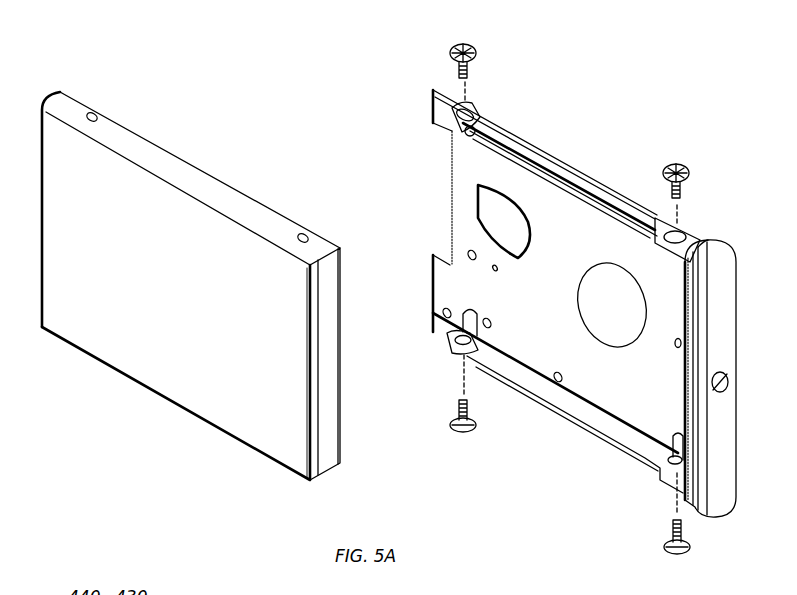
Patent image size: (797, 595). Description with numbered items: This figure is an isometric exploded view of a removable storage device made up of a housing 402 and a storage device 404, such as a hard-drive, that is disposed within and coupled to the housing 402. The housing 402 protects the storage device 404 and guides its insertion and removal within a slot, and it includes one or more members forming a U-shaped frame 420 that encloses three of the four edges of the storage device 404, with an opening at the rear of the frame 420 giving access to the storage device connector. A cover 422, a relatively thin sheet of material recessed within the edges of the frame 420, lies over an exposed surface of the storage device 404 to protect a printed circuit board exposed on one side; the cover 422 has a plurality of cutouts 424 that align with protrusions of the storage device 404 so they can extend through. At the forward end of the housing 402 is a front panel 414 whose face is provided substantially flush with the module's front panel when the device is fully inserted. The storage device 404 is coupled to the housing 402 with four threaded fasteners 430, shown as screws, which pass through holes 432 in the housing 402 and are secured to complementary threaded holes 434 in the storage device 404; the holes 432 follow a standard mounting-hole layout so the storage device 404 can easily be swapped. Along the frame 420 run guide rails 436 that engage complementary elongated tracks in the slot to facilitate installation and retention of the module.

The housing 402 is at (598, 139).
The storage device 404 is at (160, 392).
The front panel 414 is at (725, 240).
The U-shaped frame 420 is at (511, 127).
The cover 422 is at (576, 356).
The cutouts 424 is at (596, 260).
The threaded fasteners 430 is at (474, 46).
The holes 432 is at (471, 110).
The threaded holes 434 is at (94, 113).
The guide rails 436 is at (548, 147).